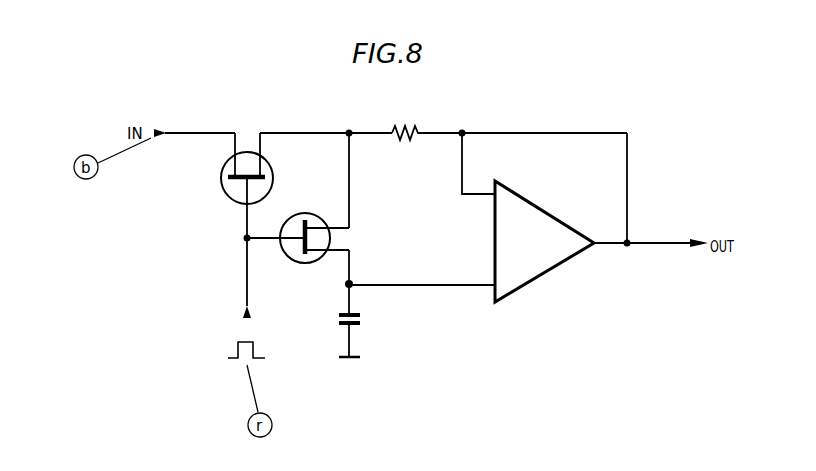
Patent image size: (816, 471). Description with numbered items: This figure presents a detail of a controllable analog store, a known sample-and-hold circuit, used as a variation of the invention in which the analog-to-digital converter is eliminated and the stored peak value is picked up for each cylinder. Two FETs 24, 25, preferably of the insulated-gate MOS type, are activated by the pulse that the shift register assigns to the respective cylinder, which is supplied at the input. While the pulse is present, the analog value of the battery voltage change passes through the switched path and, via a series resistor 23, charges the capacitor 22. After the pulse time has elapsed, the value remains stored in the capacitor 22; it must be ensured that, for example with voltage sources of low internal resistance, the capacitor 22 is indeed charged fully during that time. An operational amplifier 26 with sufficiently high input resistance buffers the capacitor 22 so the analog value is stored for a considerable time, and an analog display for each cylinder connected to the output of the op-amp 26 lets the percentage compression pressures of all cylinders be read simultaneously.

The capacitor 22 is at (363, 320).
The resistor R 23 is at (407, 128).
The FET 24 is at (316, 220).
The FET 25 is at (228, 168).
The operational amplifier 26 is at (545, 242).